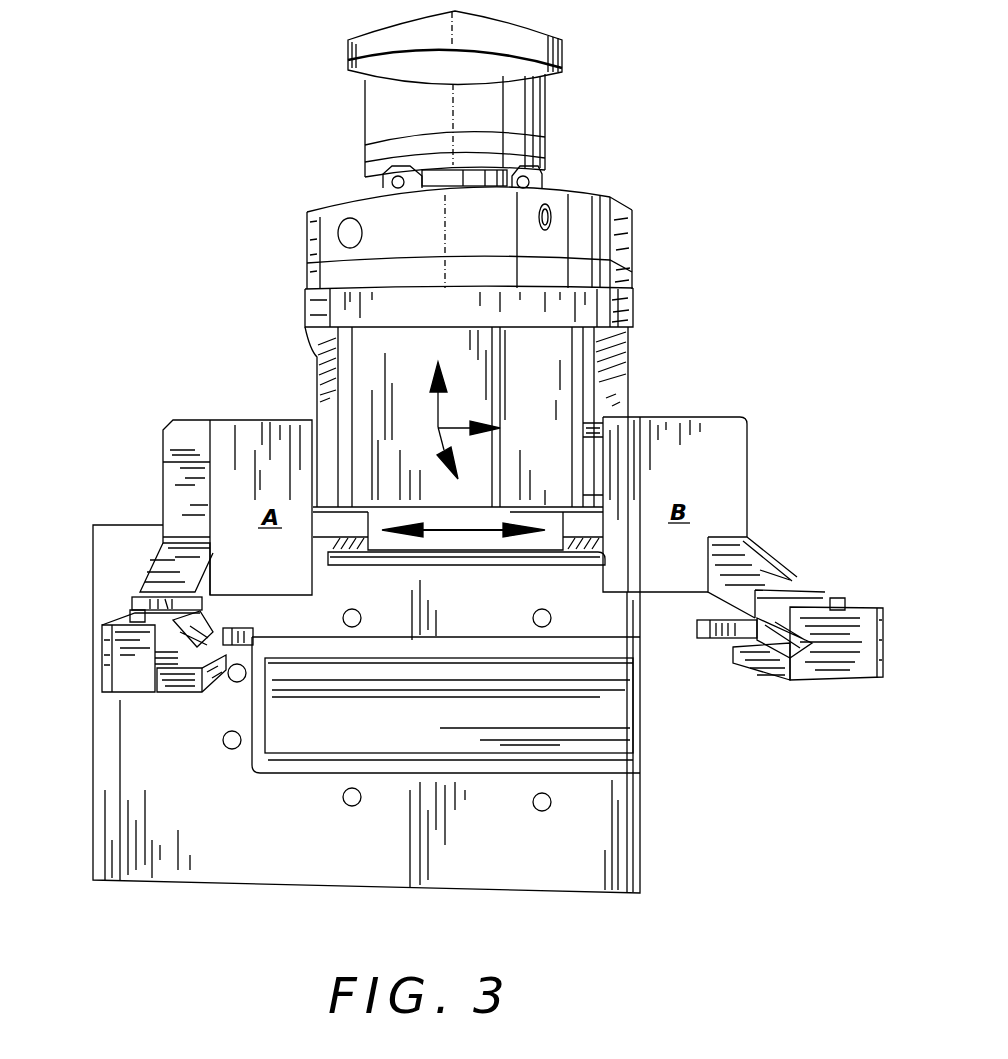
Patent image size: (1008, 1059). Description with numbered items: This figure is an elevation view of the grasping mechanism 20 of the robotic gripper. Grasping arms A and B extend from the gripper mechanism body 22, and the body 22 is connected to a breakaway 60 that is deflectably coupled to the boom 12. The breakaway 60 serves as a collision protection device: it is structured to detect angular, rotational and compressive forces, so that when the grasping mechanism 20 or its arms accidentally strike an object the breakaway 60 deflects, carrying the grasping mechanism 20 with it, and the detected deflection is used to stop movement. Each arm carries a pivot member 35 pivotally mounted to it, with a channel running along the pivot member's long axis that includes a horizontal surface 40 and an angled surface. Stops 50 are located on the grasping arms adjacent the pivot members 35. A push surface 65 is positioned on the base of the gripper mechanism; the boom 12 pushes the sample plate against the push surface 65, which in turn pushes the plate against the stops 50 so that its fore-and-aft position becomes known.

The boom 12 is at (277, 840).
The grasping mechanism 20 is at (282, 388).
The gripper mechanism body 22 is at (540, 467).
The pivot members 35 is at (173, 683).
The horizontal surface 40 is at (212, 652).
The stops 50 is at (207, 663).
The breakaway 60 is at (383, 225).
The push surface 65 is at (527, 717).